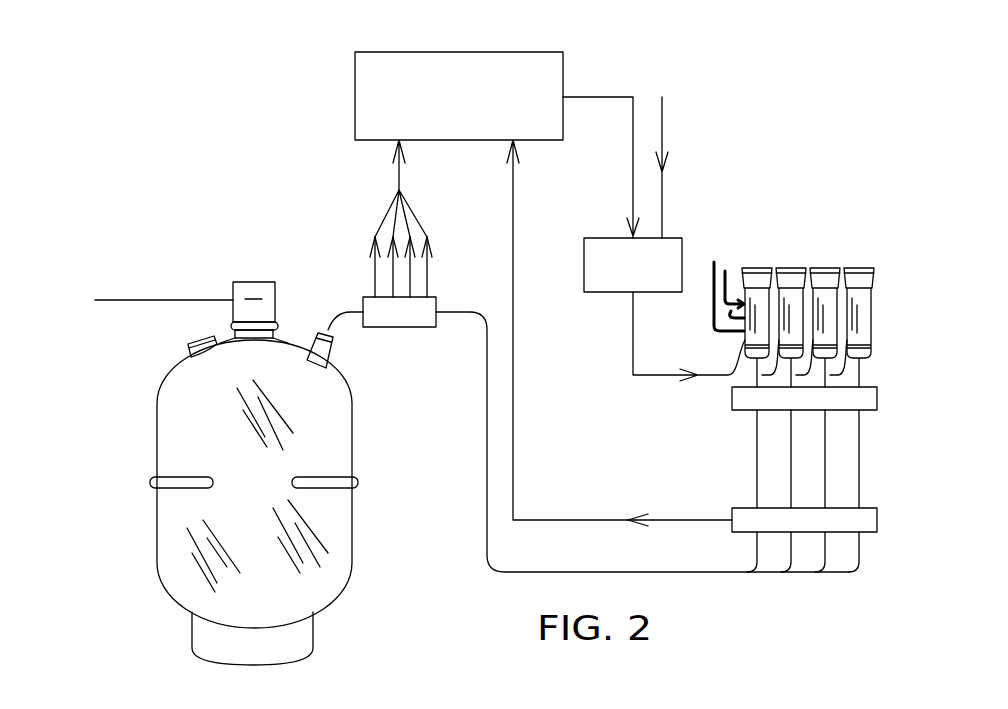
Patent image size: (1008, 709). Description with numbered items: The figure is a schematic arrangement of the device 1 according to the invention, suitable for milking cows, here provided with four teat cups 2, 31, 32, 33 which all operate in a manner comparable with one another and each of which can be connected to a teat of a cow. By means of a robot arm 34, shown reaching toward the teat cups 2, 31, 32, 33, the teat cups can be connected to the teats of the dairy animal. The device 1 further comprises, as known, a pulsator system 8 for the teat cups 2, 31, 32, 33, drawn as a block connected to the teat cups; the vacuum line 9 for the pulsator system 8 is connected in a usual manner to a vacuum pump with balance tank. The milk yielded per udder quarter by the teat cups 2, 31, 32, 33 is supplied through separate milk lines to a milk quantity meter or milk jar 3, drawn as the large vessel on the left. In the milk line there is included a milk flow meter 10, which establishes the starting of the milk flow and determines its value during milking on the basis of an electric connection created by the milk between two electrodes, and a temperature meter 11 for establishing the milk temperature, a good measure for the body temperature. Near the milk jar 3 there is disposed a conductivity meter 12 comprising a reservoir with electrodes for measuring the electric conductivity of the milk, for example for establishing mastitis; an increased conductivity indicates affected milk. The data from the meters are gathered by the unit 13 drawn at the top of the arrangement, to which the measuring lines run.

The device 1 is at (562, 403).
The teat cup 2 is at (858, 277).
The milk jar 3 is at (334, 517).
The pulsator system 8 is at (662, 257).
The vacuum line 9 is at (662, 201).
The milk flow meter 10 is at (740, 398).
The temperature meter 11 is at (747, 520).
The conductivity meter 12 is at (400, 310).
The control computer 13 is at (533, 85).
The teat cup 31 is at (755, 277).
The teat cup 32 is at (790, 277).
The teat cup 33 is at (825, 277).
The robot arm 34 is at (722, 266).